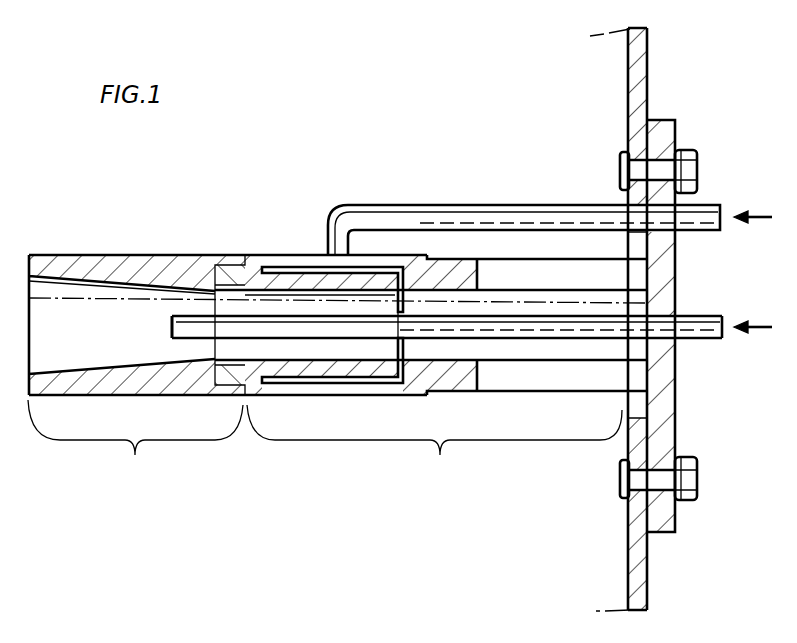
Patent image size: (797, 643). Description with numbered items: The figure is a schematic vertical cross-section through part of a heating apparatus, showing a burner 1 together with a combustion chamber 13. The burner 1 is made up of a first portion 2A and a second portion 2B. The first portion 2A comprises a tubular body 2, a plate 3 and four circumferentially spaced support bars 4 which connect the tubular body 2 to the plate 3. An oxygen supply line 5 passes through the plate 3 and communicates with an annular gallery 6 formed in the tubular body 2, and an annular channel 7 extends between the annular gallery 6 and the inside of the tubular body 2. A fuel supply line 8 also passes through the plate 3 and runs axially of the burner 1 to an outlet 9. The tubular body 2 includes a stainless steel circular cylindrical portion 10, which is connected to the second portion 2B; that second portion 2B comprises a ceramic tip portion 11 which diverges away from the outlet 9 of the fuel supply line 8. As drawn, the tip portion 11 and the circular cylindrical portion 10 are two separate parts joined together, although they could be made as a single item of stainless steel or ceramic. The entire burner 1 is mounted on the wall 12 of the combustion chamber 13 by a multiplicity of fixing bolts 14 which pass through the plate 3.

The burner 1 is at (292, 509).
The tubular body 2 is at (292, 250).
The first portion 2A is at (431, 371).
The second portion 2B is at (337, 371).
The plate 3 is at (662, 288).
The support bars 4 is at (556, 278).
The oxygen supply line 5 is at (511, 209).
The annular gallery 6 is at (272, 268).
The annular channel 7 is at (399, 363).
The fuel supply line 8 is at (690, 342).
The outlet 9 is at (172, 323).
The circular cylindrical portion 10 is at (263, 365).
The ceramic tip portion 11 is at (114, 384).
The wall 12 is at (638, 68).
The combustion chamber 13 is at (340, 141).
The fixing bolts 14 is at (682, 164).